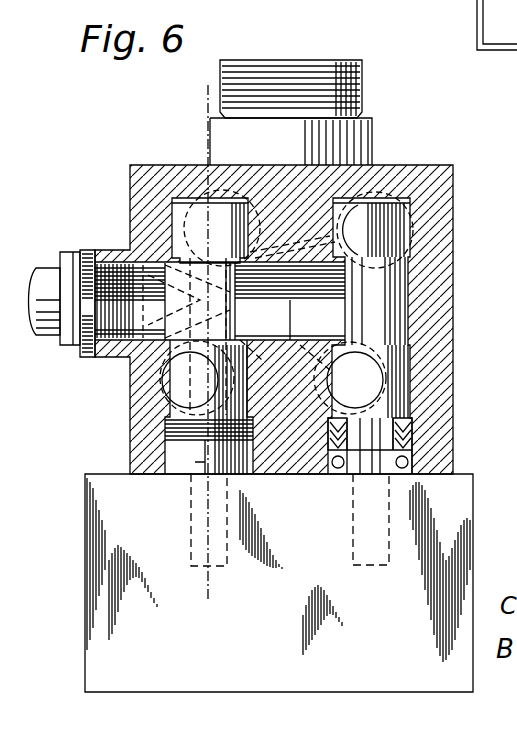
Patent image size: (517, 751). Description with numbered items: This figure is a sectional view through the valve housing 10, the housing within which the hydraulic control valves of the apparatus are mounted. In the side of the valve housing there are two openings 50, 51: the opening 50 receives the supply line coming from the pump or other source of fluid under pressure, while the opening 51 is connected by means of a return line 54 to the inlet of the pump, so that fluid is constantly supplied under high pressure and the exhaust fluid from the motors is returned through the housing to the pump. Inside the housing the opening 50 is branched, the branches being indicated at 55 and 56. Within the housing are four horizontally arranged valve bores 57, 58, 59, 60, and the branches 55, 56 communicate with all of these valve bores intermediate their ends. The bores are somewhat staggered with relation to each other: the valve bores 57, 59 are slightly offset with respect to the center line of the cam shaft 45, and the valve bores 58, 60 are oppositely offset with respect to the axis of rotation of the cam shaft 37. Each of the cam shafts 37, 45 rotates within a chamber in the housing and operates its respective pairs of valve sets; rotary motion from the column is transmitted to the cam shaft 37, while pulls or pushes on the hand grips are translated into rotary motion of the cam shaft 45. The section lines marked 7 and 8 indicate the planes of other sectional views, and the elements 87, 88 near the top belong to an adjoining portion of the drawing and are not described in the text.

The section line 8- 8 is at (206, 97).
The section line 7- 7 is at (108, 228).
The valve housing 10 is at (152, 182).
The valve bore 57 is at (205, 197).
The valve bore 58 is at (430, 207).
The return line 54 is at (45, 275).
The branch 55 is at (295, 283).
The opening 51 is at (275, 321).
The branch 56 is at (292, 348).
The cam shaft 37 is at (392, 372).
The valve bore 60 is at (385, 392).
The opening 50 is at (125, 365).
The valve bore 59 is at (183, 388).
The cam shaft 45 is at (183, 404).
The bracket 87 is at (480, 52).
The mounting flange 88 is at (497, 52).